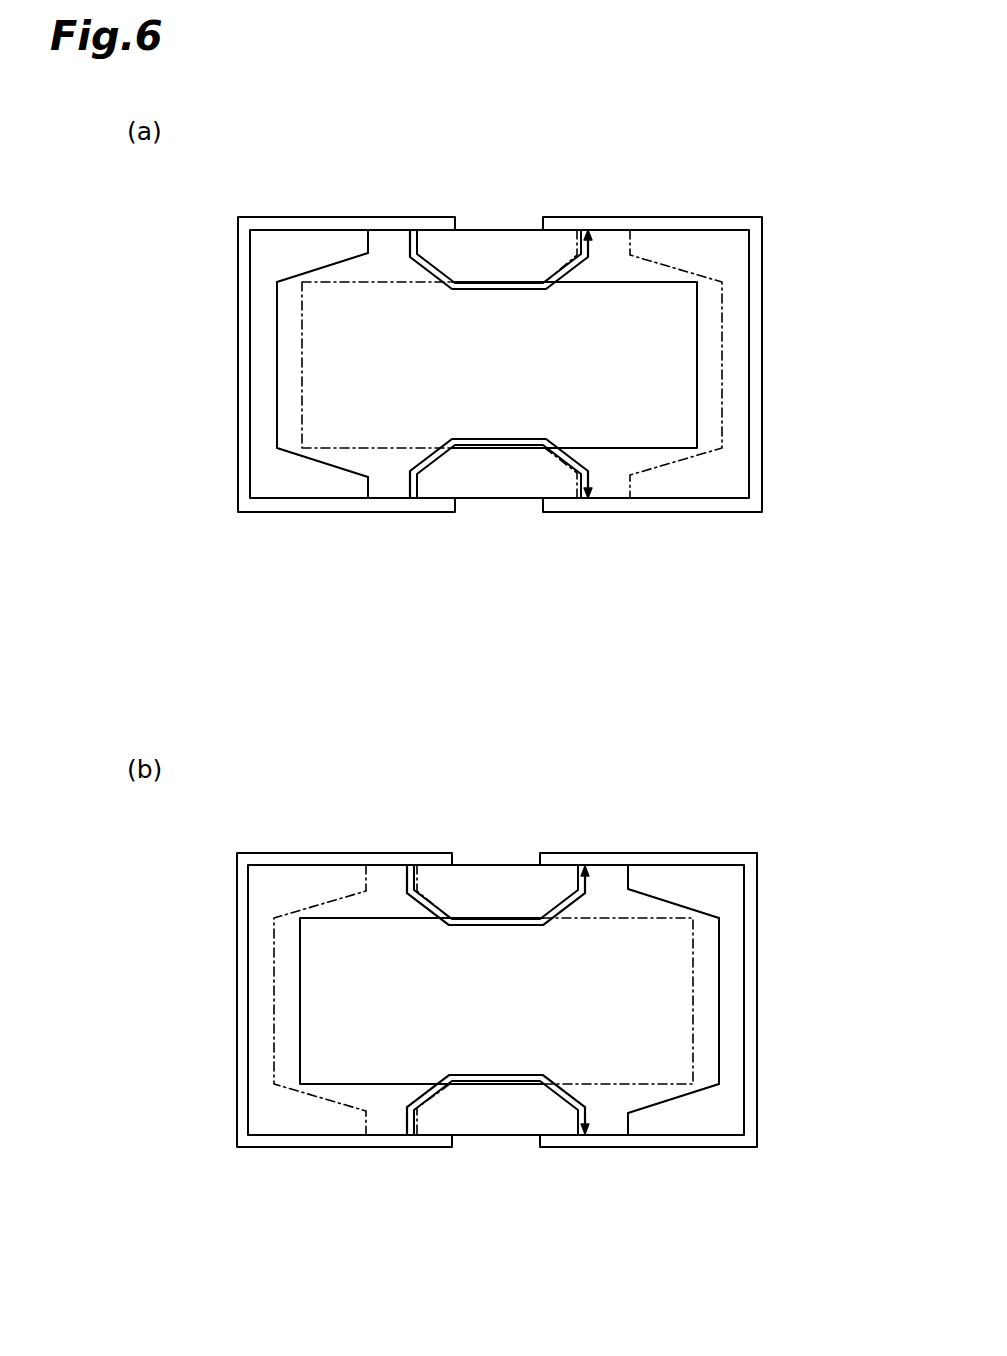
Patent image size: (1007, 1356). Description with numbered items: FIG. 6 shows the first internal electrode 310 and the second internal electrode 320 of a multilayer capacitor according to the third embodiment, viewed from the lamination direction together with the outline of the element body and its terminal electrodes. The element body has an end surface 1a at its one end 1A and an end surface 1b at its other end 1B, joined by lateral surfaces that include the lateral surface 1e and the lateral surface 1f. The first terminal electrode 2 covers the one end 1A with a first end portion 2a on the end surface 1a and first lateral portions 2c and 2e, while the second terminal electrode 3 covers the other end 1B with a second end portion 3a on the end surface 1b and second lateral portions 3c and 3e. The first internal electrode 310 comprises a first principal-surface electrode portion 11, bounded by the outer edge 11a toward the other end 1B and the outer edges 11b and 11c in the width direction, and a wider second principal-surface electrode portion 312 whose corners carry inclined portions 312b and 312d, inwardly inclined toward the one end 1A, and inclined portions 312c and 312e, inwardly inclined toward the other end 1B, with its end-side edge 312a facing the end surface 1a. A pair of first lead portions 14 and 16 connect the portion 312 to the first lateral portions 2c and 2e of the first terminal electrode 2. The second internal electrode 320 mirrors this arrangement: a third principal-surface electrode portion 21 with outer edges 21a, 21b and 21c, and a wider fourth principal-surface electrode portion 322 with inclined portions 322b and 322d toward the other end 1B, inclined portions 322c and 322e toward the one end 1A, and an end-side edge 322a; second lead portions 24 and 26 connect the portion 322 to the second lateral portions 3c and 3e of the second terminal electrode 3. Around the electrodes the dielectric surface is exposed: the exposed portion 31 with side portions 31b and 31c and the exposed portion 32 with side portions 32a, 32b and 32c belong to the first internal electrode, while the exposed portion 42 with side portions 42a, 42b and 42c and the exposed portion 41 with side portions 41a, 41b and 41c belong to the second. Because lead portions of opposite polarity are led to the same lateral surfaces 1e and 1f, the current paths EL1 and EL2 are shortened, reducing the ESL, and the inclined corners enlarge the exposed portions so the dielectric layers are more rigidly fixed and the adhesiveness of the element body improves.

The one end 1A is at (225, 352).
The other end 1B is at (778, 352).
The end surface 1a is at (252, 392).
The end surface 1b is at (750, 394).
The lateral surface 1e is at (532, 500).
The lateral surface 1f is at (533, 228).
The first terminal electrode 2 is at (232, 237).
The first end portion 2a is at (246, 325).
The first lateral portion 2c is at (352, 505).
The first lateral portion 2e is at (363, 225).
The second terminal electrode 3 is at (770, 236).
The second end portion 3a is at (762, 325).
The second lateral portion 3c is at (660, 507).
The second lateral portion 3e is at (649, 228).
The first principal-surface electrode portion 11 is at (675, 270).
The outer edge 11a is at (698, 420).
The outer edge 11b is at (617, 450).
The outer edge 11c is at (598, 256).
The first lead portion 14 is at (390, 497).
The first lead portion 16 is at (395, 232).
The third principal-surface electrode portion 21 is at (335, 948).
The outer edge 21a is at (298, 1083).
The outer edge 21b is at (383, 1085).
The outer edge 21c is at (383, 912).
The second lead portion 24 is at (602, 1135).
The second lead portion 26 is at (616, 866).
The exposed portion 31 is at (266, 291).
The side portion 31b is at (318, 488).
The side portion 31c is at (333, 243).
The exposed portion 32 is at (740, 292).
The side portion 32a is at (733, 440).
The side portion 32b is at (475, 485).
The side portion 32c is at (470, 243).
The exposed portion 41 is at (740, 930).
The side portion 41a is at (720, 1043).
The side portion 41b is at (678, 1122).
The side portion 41c is at (644, 878).
The exposed portion 42 is at (257, 929).
The side portion 42a is at (285, 1048).
The side portion 42b is at (512, 1128).
The side portion 42c is at (508, 905).
The first internal electrode 310 is at (626, 342).
The second principal-surface electrode portion 312 is at (339, 340).
The end edge of lead portion 312 312a is at (275, 428).
The inclined portion 312b is at (288, 460).
The inclined portion 312c is at (443, 458).
The inclined portion 312d is at (297, 272).
The inclined portion 312e is at (428, 252).
The second internal electrode 320 is at (722, 925).
The fourth principal-surface electrode portion 322 is at (669, 949).
The end edge of lead portion 322 322a is at (720, 1067).
The inclined portion 322b is at (712, 1090).
The inclined portion 322c is at (544, 1108).
The inclined portion 322d is at (703, 899).
The inclined portion 322e is at (563, 880).
The current path EL1 is at (515, 447).
The current path EL2 is at (497, 282).